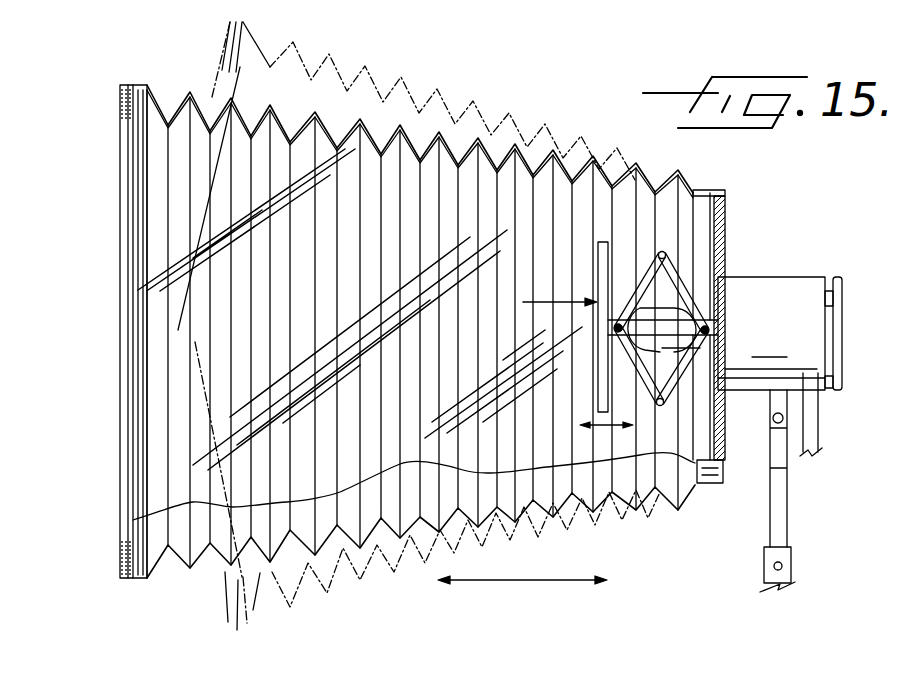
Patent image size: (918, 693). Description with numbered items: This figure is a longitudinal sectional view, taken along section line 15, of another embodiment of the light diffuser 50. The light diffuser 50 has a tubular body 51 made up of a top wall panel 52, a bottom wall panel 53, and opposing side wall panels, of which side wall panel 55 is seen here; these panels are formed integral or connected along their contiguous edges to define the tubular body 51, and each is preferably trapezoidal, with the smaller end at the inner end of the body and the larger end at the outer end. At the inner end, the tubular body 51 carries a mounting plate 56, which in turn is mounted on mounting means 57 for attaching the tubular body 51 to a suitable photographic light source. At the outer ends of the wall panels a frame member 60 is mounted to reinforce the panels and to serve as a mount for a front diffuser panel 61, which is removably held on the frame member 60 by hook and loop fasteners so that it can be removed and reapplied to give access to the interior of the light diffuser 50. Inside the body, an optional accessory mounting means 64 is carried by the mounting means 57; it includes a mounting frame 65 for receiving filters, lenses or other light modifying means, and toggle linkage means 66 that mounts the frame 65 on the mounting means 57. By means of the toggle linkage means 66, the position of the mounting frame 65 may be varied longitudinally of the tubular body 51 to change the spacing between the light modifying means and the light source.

The figure reference 15 is at (531, 0).
The light diffuser 50 is at (185, 572).
The tubular body 51 is at (189, 72).
The top wall panel 52 is at (453, 119).
The bottom wall panel 53 is at (423, 520).
The side wall panel 55 is at (398, 273).
The mounting plate 56 is at (717, 240).
The mounting means 57 is at (718, 267).
The frame member 60 is at (133, 87).
The front diffuser panel 61 is at (120, 284).
The accessory mounting means 64 is at (535, 436).
The mounting frame 65 is at (600, 268).
The toggle linkage means 66 is at (647, 277).